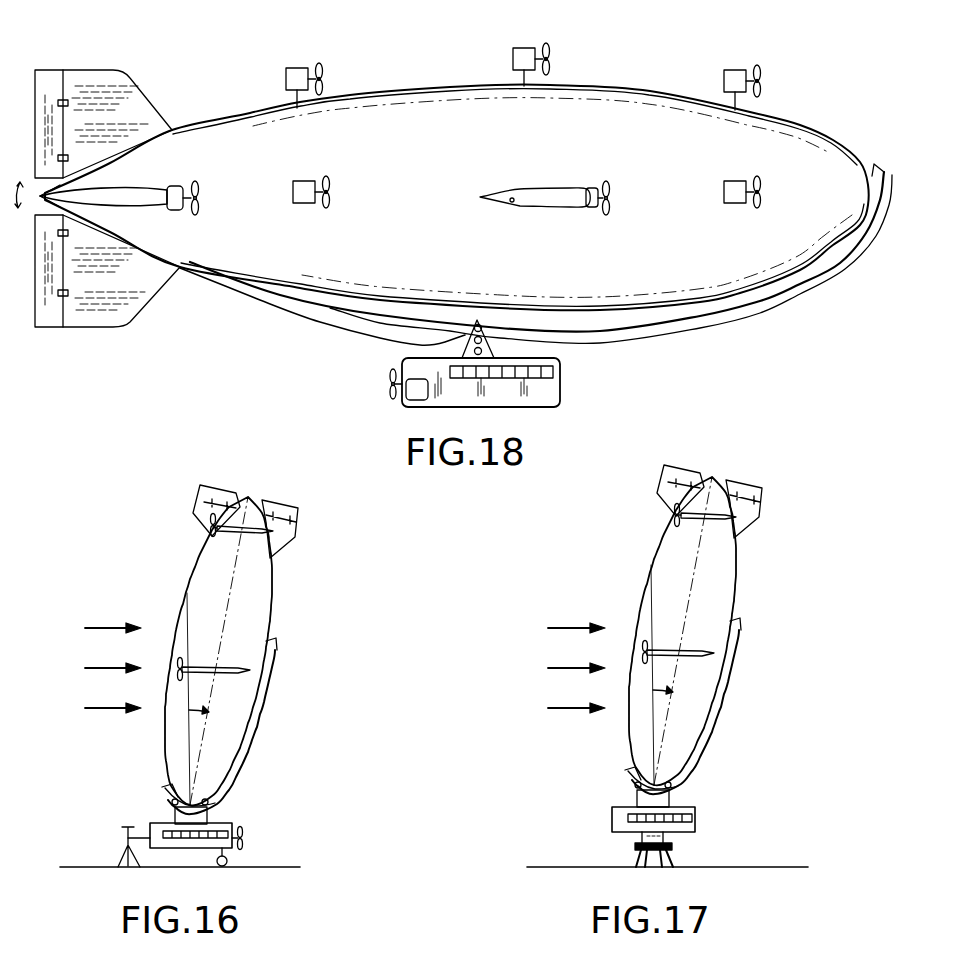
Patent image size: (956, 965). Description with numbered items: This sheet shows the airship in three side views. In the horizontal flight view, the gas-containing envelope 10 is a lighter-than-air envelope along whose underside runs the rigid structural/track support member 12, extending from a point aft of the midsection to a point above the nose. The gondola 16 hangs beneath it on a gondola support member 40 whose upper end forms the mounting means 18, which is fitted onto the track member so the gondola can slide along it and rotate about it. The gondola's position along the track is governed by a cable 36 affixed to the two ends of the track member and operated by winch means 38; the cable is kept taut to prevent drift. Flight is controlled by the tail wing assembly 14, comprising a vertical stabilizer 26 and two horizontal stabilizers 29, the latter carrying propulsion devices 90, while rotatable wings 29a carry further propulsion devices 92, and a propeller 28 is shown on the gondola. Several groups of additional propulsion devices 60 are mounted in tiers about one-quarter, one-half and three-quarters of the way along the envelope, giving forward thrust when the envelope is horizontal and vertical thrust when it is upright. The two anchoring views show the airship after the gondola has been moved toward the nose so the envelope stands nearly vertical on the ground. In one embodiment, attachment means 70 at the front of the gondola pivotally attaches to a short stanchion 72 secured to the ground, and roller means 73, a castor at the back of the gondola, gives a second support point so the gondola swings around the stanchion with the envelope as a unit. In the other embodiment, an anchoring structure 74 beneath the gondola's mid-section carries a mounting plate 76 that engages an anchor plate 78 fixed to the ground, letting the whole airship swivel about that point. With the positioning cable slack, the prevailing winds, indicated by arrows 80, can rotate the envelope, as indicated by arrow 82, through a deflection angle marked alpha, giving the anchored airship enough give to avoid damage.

In FIG. 18, the gas-containing envelope 10 is at (787, 137).
In FIG. 16, the gas-containing envelope 10 is at (268, 613).
In FIG. 17, the gas-containing envelope 10 is at (729, 592).
In FIG. 18, the structural/track support member 12 is at (792, 287).
In FIG. 16, the structural/track support member 12 is at (262, 713).
In FIG. 17, the structural/track support member 12 is at (722, 696).
In FIG. 18, the tail wing assembly 14 is at (173, 85).
In FIG. 18, the gondola 16 is at (562, 397).
In FIG. 16, the gondola 16 is at (232, 826).
In FIG. 17, the gondola 16 is at (695, 811).
In FIG. 18, the mounting means 18 is at (481, 322).
In FIG. 18, the vertical stabilizer 26 is at (100, 72).
In FIG. 16, the vertical stabilizer 26 is at (298, 513).
In FIG. 17, the vertical stabilizer 26 is at (760, 514).
In FIG. 18, the gondola propeller 28 is at (388, 380).
In FIG. 16, the gondola propeller 28 is at (243, 838).
In FIG. 16, the horizontal stabilizers 29 is at (216, 545).
In FIG. 18, the rotatable wings 29a is at (543, 193).
In FIG. 16, the rotatable wings 29a is at (245, 669).
In FIG. 18, the cable 36 is at (728, 324).
In FIG. 18, the winch means 38 is at (493, 350).
In FIG. 18, the gondola support member 40 is at (415, 343).
In FIG. 18, the additional propulsion devices 60 is at (296, 68).
In FIG. 16, the attachment means 70 is at (150, 832).
In FIG. 16, the stanchion 72 is at (122, 862).
In FIG. 16, the roller means 73 is at (230, 862).
In FIG. 17, the anchoring structure 74 is at (640, 838).
In FIG. 17, the mounting plate 76 is at (672, 843).
In FIG. 17, the anchor plate 78 is at (675, 852).
In FIG. 16, the arrows indicating prevailing winds 80 is at (108, 625).
In FIG. 17, the arrows indicating prevailing winds 80 is at (563, 626).
In FIG. 16, the arrow indicating envelope rotation 82 is at (240, 462).
In FIG. 17, the arrow indicating envelope rotation 82 is at (700, 445).
In FIG. 18, the propulsion devices 90 is at (198, 190).
In FIG. 16, the propulsion devices 90 is at (208, 527).
In FIG. 18, the propulsion devices 92 is at (617, 170).
In FIG. 16, the propulsion devices 92 is at (178, 668).